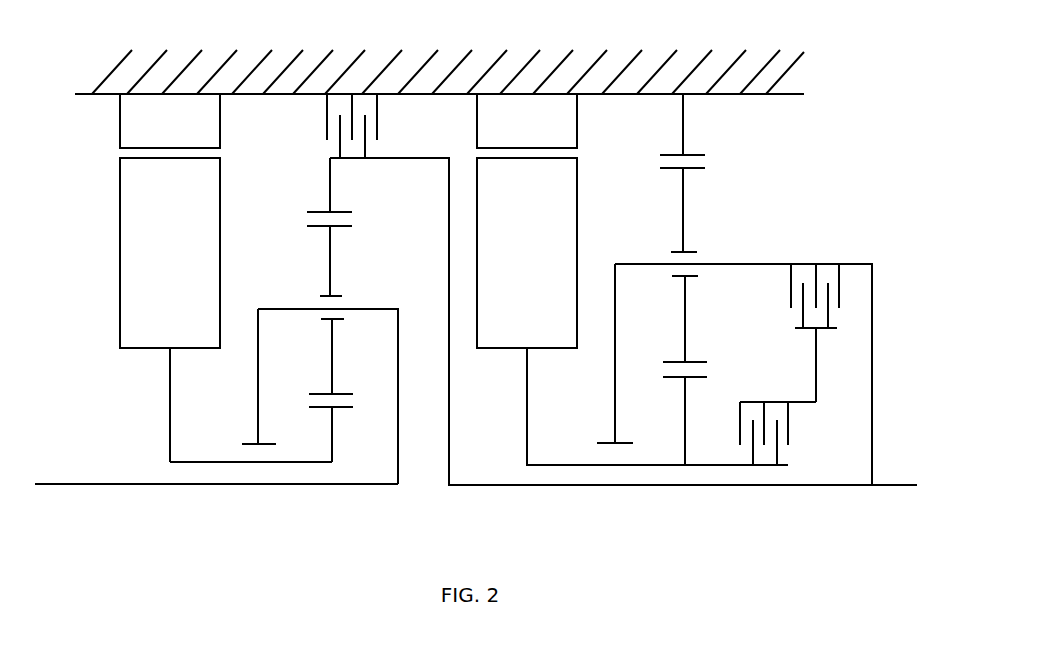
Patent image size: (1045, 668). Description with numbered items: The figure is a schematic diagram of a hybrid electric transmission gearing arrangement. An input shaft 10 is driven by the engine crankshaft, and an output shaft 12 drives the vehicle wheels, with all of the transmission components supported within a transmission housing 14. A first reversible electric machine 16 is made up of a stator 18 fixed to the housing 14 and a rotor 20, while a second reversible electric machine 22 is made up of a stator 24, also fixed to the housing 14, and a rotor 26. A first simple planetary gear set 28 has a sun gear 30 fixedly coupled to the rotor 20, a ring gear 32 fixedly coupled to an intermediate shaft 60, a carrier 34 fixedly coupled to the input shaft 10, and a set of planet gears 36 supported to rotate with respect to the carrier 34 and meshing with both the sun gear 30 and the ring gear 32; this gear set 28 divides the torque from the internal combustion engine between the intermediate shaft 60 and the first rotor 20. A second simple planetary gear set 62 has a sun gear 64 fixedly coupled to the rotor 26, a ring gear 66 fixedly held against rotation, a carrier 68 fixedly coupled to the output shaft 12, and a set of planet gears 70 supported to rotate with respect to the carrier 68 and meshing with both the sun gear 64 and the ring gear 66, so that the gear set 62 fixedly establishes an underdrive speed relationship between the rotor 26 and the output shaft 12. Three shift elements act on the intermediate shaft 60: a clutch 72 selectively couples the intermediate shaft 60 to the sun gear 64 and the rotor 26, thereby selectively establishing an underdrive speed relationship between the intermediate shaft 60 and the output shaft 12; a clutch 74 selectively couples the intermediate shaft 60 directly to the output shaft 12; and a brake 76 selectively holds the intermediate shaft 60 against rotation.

The input shaft 10 is at (85, 484).
The output shaft 12 is at (897, 483).
The transmission housing 14 is at (423, 62).
The first reversible electric machine 16 is at (170, 85).
The stator 18 is at (166, 242).
The rotor 20 is at (221, 255).
The second reversible electric machine 22 is at (527, 85).
The stator 24 is at (477, 123).
The rotor 26 is at (577, 227).
The first simple planetary gear set 28 is at (328, 422).
The sun gear 30 is at (333, 450).
The ring gear 32 is at (330, 178).
The carrier 34 is at (258, 387).
The planet gears 36 is at (332, 268).
The intermediate shaft 60 is at (482, 488).
The second simple planetary gear set 62 is at (743, 397).
The sun gear 64 is at (685, 437).
The ring gear 66 is at (683, 120).
The carrier 68 is at (615, 382).
The planet gears 70 is at (686, 226).
The clutch 72 is at (753, 402).
The clutch 74 is at (791, 283).
The brake 76 is at (327, 123).